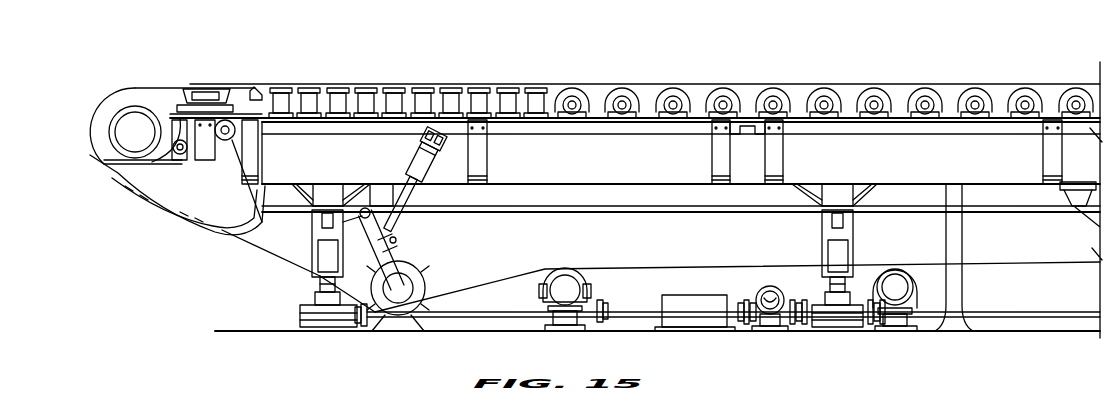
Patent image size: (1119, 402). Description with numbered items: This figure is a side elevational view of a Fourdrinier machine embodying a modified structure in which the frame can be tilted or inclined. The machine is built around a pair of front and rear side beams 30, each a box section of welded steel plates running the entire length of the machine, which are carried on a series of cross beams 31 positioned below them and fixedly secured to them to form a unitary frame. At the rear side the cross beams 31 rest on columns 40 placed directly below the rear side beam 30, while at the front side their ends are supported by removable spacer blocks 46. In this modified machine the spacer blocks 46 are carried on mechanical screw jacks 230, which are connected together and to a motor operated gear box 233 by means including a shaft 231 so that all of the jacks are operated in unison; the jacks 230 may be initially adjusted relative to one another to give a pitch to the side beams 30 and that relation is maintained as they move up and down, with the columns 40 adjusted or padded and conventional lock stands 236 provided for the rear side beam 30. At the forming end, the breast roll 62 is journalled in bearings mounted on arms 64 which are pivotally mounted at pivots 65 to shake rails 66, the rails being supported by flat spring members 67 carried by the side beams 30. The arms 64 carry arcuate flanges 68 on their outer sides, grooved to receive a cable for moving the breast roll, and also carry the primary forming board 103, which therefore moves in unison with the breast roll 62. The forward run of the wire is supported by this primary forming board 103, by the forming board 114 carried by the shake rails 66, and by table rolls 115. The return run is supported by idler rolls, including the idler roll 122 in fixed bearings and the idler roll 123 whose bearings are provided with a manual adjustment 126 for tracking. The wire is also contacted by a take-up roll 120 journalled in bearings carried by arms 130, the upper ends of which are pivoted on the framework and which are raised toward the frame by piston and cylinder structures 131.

The side beams 30 is at (658, 200).
The cross beams 31 is at (333, 194).
The columns 40 is at (890, 130).
The spacer blocks 46 is at (312, 247).
The breast roll 62 is at (100, 118).
The arms 64 is at (128, 186).
The pivots 65 is at (225, 141).
The shake rails 66 is at (303, 134).
The flat spring members 67 is at (186, 161).
The arcuate flanges 68 is at (184, 203).
The primary forming board 103 is at (204, 96).
The forming board 114 is at (362, 78).
The table rolls 115 is at (640, 88).
The take-up roll 120 is at (407, 276).
The idler roll 122 is at (906, 270).
The idler roll 123 is at (587, 282).
The manual adjustment 126 is at (603, 310).
The arms 130 is at (370, 238).
The piston and cylinder structures 131 is at (420, 197).
The mechanical screw jacks 230 is at (310, 300).
The shaft 231 is at (477, 314).
The motor operated gear box 233 is at (766, 289).
The lock stands 236 is at (383, 195).